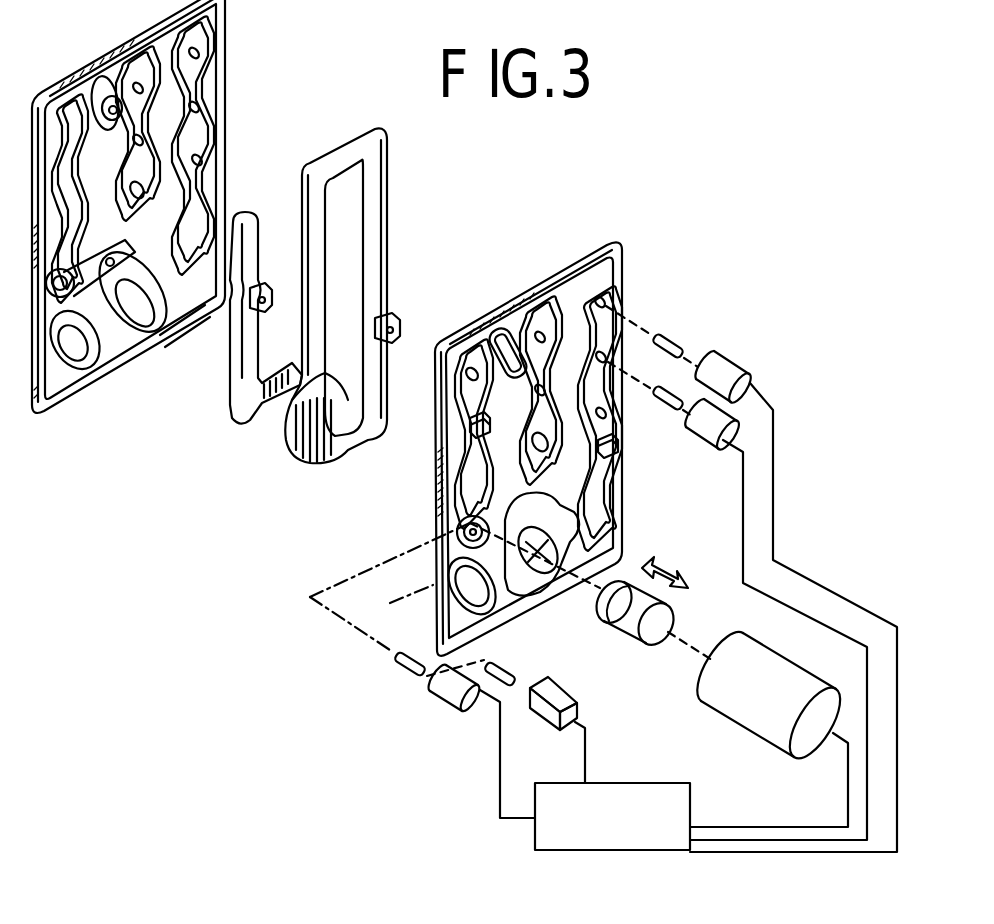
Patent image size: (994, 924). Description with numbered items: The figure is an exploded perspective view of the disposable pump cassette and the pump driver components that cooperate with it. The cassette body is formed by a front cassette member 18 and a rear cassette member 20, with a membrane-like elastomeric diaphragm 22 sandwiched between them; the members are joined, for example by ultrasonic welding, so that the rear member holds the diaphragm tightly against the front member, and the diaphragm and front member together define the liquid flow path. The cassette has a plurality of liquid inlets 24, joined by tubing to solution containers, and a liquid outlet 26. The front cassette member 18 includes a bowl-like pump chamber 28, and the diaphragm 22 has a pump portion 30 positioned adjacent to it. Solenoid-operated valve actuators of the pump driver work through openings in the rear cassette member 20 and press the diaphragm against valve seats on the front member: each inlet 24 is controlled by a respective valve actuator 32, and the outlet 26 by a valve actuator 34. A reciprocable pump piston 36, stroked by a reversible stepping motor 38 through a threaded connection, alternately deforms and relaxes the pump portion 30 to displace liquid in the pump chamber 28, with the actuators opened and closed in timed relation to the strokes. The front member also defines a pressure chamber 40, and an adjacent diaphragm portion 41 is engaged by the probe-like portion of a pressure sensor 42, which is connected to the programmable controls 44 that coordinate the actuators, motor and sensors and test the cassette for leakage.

The front cassette member 18 is at (181, 217).
The rear cassette member 20 is at (632, 270).
The elastomeric diaphragm 22 is at (372, 306).
The liquid inlets 24 is at (198, 58).
The liquid outlet 26 is at (76, 248).
The pump chamber 28 is at (120, 308).
The pump portion 30 is at (306, 445).
The valve actuators 32 is at (716, 428).
The valve actuator 34 is at (445, 688).
The pump piston 36 is at (632, 650).
The reversible stepping motor 38 is at (735, 695).
The pressure chamber 40 is at (66, 340).
The diaphragm portion 41 is at (246, 405).
The pressure sensor 42 is at (560, 688).
The programmable controls 44 is at (625, 833).